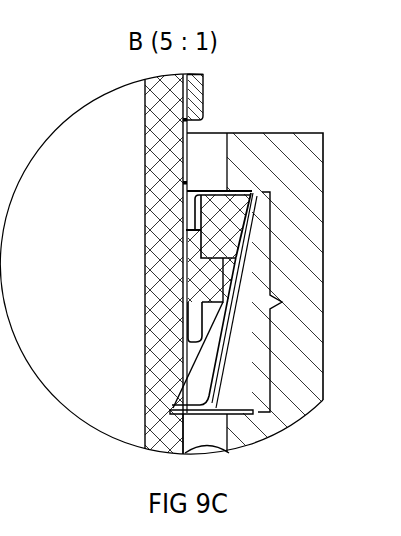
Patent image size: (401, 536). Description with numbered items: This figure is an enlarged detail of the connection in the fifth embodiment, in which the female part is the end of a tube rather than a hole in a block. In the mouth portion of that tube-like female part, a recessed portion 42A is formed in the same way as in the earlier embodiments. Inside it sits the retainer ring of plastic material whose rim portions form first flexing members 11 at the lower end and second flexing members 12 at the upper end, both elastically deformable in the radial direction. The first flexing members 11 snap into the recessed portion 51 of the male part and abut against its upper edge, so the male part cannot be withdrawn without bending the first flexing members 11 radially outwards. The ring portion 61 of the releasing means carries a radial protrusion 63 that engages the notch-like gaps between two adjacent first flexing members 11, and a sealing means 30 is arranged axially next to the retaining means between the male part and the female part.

The first flexing member 11 is at (188, 378).
The second flexing member 12 is at (228, 212).
The sealing means 30 is at (207, 452).
The recessed portion 42A is at (254, 280).
The recessed portion 51 is at (172, 413).
The ring portion 61 is at (197, 323).
The radial protrusion 63 is at (212, 280).